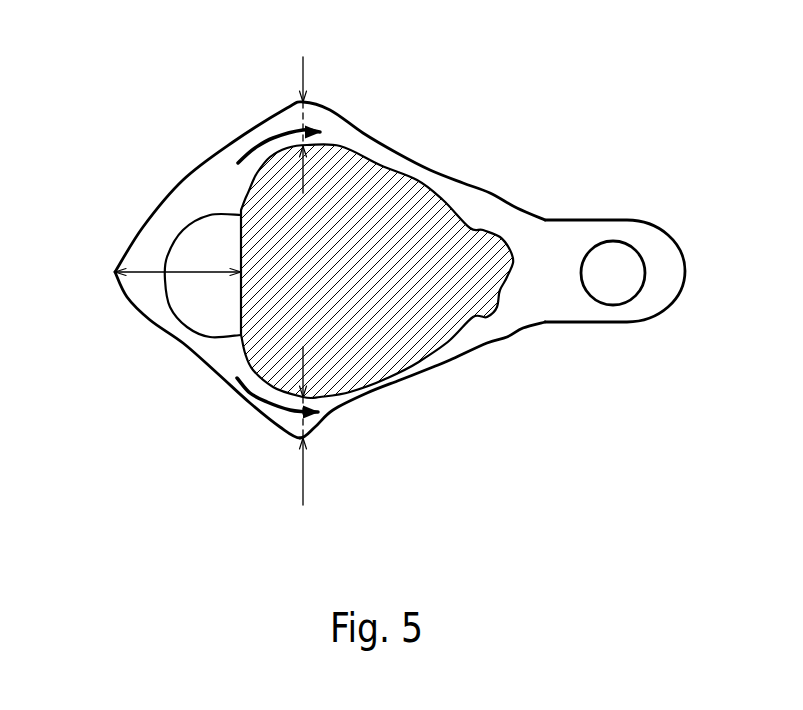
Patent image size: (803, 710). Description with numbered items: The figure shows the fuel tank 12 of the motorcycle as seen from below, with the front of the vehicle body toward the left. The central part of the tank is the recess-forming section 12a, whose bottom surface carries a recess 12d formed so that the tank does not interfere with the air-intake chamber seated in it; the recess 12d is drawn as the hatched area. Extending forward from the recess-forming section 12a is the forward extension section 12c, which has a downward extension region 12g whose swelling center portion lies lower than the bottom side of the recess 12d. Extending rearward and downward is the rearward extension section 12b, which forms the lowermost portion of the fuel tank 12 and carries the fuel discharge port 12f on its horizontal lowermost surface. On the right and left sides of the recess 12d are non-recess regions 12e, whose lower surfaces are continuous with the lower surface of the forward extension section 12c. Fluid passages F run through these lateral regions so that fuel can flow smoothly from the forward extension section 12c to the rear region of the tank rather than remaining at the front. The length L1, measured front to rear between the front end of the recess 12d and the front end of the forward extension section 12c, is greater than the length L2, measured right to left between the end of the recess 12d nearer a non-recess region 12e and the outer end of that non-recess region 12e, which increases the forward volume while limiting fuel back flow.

The fuel tank 12 is at (455, 115).
The recess-forming section 12a is at (415, 395).
The rearward extension section 12b is at (612, 333).
The forward extension section 12c is at (148, 368).
The recess 12d is at (447, 342).
The non-recess region 12e is at (370, 150).
The fuel discharge port 12f is at (613, 242).
The downward extension region 12g is at (193, 310).
The length in the forward and rearward direction L1 is at (152, 270).
The length in the rightward and leftward direction L2 is at (303, 125).
The fluid passage F is at (273, 137).